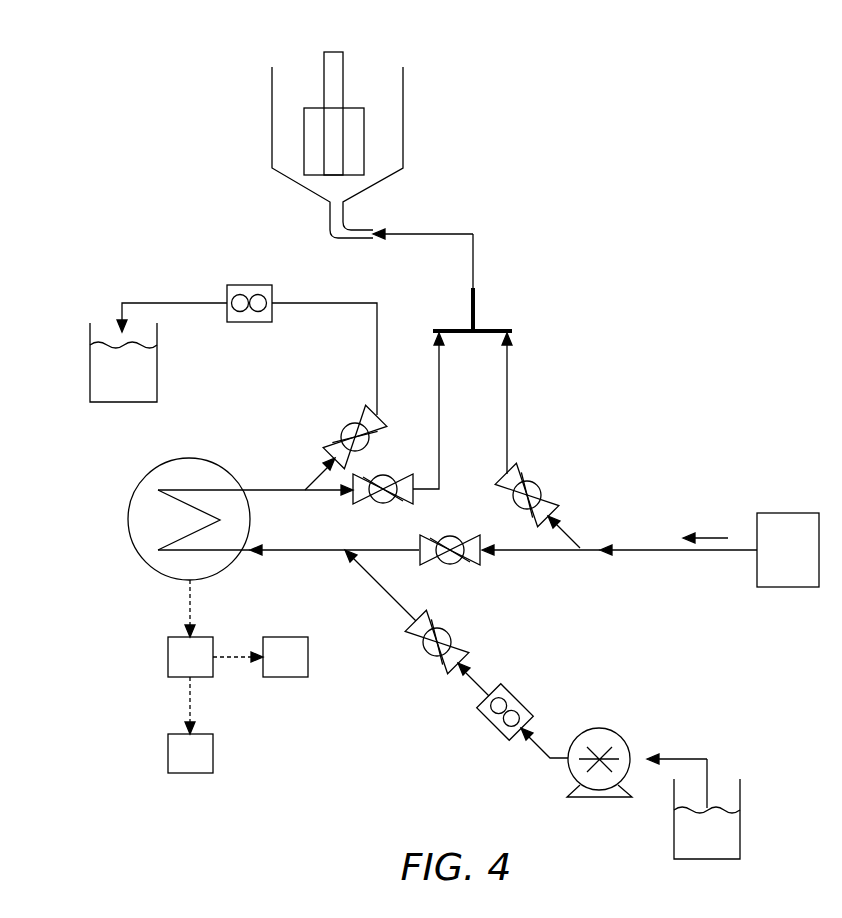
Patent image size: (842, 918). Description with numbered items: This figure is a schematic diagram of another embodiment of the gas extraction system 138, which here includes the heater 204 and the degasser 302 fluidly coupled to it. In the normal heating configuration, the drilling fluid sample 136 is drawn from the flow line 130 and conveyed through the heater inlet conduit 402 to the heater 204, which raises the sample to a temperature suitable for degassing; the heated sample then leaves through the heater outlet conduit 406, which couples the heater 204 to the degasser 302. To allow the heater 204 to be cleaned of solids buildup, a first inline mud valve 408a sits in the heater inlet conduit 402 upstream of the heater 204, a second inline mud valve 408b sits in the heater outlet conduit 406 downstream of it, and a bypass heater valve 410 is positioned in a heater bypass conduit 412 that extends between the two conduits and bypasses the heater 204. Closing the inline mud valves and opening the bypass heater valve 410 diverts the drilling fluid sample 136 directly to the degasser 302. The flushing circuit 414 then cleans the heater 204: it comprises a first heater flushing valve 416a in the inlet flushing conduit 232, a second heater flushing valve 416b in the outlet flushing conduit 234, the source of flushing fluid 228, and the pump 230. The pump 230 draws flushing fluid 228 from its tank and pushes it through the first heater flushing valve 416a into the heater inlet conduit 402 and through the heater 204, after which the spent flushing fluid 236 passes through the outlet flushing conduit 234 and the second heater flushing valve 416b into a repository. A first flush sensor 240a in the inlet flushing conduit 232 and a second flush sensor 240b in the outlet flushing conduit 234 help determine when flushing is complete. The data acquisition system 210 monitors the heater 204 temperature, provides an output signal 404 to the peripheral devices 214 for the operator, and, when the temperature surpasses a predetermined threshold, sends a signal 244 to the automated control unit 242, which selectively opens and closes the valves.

The degasser 302 is at (403, 109).
The gas extraction system 138 is at (610, 263).
The second flush sensor 240b is at (252, 285).
The spent flushing fluid 236 is at (106, 387).
The outlet flushing conduit 234 is at (345, 303).
The second heater flushing valve 416b is at (345, 430).
The heater 204 is at (190, 458).
The heater outlet conduit 406 is at (268, 488).
The second inline mud valve 408b is at (378, 478).
The heater bypass conduit 412 is at (507, 405).
The bypass heater valve 410 is at (545, 488).
The drilling fluid sample 136 is at (708, 536).
The flow line 130 is at (788, 550).
The heater inlet conduit 402 is at (690, 552).
The first inline mud valve 408a is at (465, 565).
The inlet flushing conduit 232 is at (383, 593).
The first heater flushing valve 416a is at (428, 655).
The first flush sensor 240a is at (520, 690).
The flushing circuit 414 is at (448, 700).
The pump 230 is at (622, 737).
The flushing fluid 228 is at (690, 845).
The data acquisition system 210 is at (207, 670).
The automated control unit 242 is at (302, 670).
The peripheral devices 214 is at (207, 767).
The output signal 404 is at (188, 705).
The signal 244 is at (228, 662).